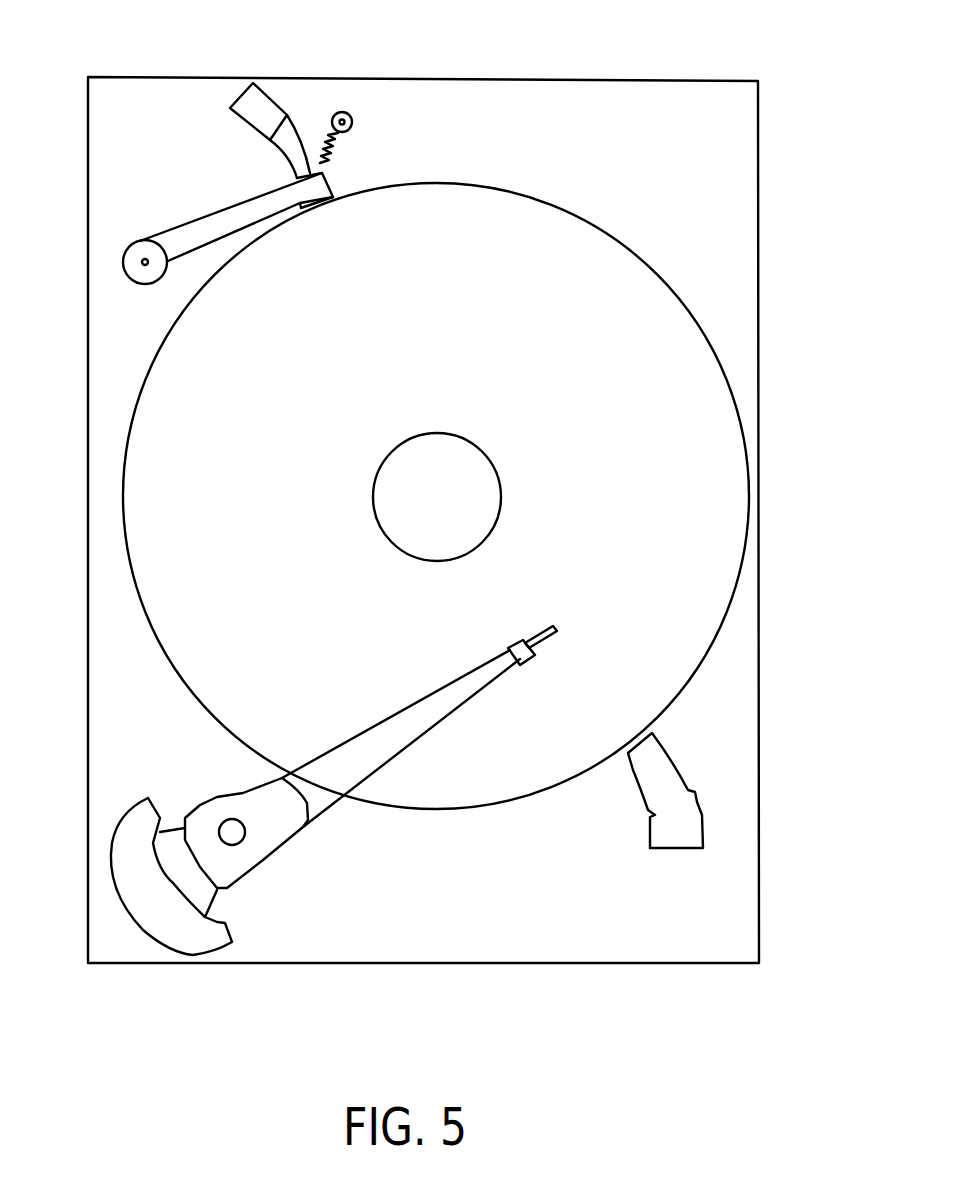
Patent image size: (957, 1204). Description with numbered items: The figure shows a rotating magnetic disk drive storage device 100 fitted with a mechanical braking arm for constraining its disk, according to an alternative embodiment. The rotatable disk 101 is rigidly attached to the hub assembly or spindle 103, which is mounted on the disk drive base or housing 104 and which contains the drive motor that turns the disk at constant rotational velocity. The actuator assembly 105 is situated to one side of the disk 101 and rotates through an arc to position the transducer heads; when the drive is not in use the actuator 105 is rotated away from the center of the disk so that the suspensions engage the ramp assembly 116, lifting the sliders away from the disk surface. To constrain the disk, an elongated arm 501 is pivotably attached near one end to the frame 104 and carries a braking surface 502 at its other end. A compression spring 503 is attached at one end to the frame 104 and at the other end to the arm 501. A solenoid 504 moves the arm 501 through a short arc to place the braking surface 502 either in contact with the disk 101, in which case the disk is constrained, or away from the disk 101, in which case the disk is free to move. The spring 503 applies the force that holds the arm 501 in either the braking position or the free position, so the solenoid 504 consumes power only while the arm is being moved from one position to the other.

The disk drive storage device 100 is at (668, 68).
The rotatable disk 101 is at (628, 299).
The hub assembly 103 is at (455, 510).
The disk drive base 104 is at (758, 120).
The actuator assembly 105 is at (307, 829).
The ramp assembly 116 is at (702, 817).
The elongated arm 501 is at (183, 226).
The braking surface 502 is at (327, 201).
The compression spring 503 is at (343, 148).
The solenoid 504 is at (273, 93).